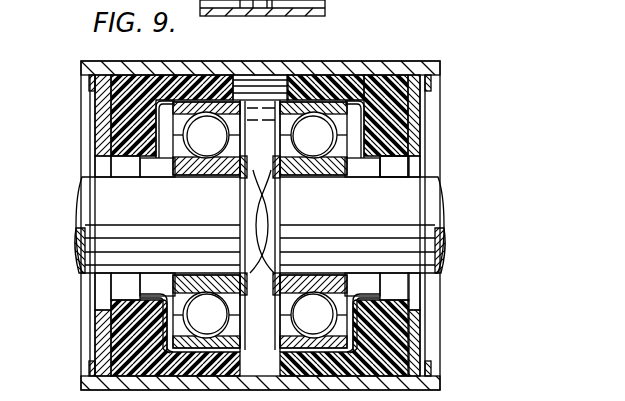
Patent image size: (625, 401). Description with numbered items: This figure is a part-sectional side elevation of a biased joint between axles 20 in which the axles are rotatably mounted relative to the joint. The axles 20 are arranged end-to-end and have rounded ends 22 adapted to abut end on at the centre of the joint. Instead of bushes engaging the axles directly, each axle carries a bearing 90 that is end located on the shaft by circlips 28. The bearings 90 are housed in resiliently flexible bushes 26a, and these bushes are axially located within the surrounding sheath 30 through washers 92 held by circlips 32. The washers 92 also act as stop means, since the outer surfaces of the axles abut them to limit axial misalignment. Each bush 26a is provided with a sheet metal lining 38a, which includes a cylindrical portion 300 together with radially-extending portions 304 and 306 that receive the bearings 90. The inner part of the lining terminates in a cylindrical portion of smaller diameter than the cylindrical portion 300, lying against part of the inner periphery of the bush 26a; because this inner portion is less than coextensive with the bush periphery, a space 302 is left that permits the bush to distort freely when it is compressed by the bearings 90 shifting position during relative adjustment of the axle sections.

The axle 20 is at (116, 215).
The rounded end 22 is at (271, 170).
The resiliently flexible bush 26a is at (161, 77).
The circlip 28 is at (240, 211).
The sheath 30 is at (263, 75).
The circlip 32 is at (96, 75).
The sheet metal lining 38a is at (153, 162).
The bearing 90 is at (207, 175).
The washer 92 is at (113, 75).
The cylindrical portion 300 is at (300, 92).
The space 302 is at (400, 156).
The radially-extending portion 304 is at (413, 100).
The radially-extending portion 306 is at (411, 63).